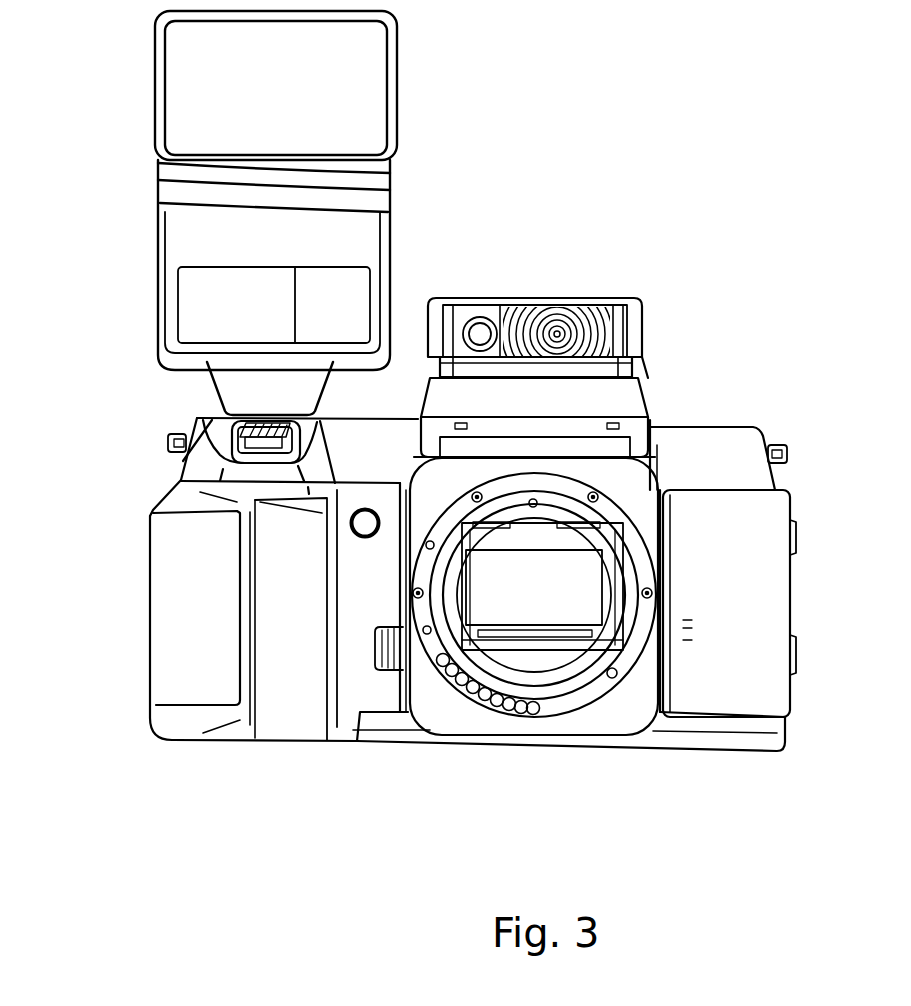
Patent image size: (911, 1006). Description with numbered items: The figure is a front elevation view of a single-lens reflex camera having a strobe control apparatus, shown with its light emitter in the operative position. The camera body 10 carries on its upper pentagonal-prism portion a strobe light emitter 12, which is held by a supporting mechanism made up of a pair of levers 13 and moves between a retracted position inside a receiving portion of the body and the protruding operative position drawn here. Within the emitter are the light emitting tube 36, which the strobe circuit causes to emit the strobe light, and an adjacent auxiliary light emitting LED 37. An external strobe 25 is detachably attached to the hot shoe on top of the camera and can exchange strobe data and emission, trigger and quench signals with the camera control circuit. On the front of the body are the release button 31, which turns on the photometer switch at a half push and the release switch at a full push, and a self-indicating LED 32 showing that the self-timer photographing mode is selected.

The camera body 10 is at (753, 411).
The strobe light emitter 12 is at (565, 283).
The lever 13 is at (643, 366).
The external strobe 25 is at (397, 59).
The release button 31 is at (200, 418).
The self-indicating LED 32 is at (351, 532).
The light emitting tube 36 is at (602, 304).
The auxiliary light emitting LED 37 is at (480, 326).